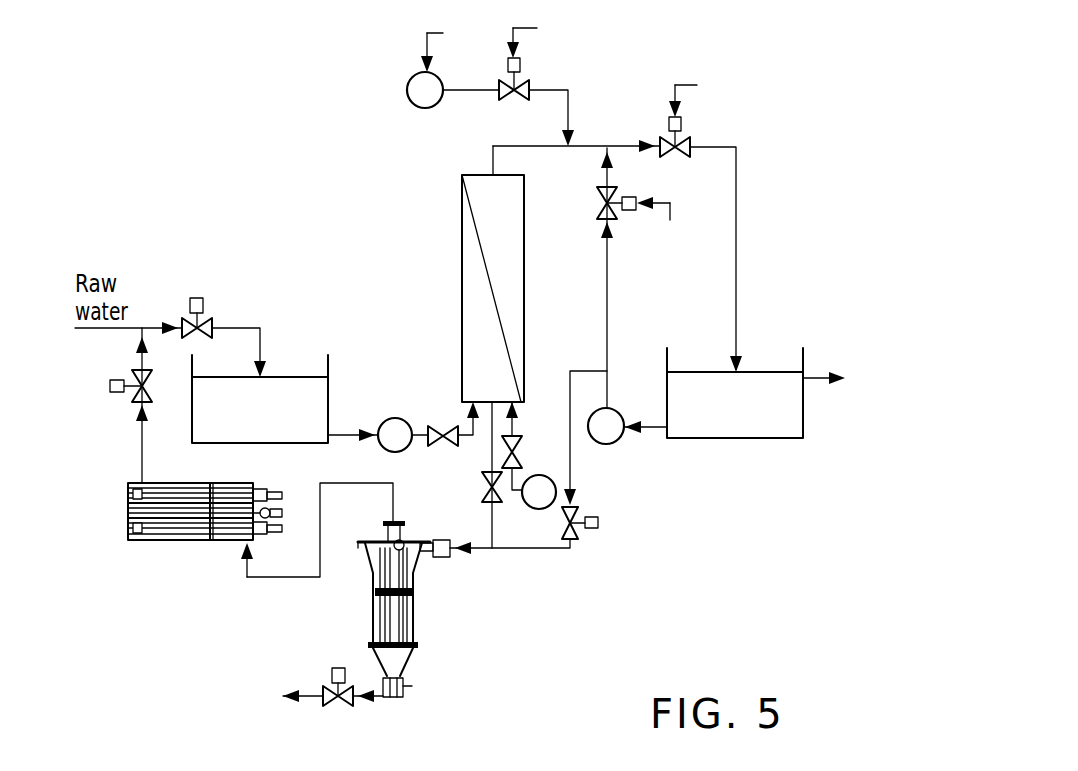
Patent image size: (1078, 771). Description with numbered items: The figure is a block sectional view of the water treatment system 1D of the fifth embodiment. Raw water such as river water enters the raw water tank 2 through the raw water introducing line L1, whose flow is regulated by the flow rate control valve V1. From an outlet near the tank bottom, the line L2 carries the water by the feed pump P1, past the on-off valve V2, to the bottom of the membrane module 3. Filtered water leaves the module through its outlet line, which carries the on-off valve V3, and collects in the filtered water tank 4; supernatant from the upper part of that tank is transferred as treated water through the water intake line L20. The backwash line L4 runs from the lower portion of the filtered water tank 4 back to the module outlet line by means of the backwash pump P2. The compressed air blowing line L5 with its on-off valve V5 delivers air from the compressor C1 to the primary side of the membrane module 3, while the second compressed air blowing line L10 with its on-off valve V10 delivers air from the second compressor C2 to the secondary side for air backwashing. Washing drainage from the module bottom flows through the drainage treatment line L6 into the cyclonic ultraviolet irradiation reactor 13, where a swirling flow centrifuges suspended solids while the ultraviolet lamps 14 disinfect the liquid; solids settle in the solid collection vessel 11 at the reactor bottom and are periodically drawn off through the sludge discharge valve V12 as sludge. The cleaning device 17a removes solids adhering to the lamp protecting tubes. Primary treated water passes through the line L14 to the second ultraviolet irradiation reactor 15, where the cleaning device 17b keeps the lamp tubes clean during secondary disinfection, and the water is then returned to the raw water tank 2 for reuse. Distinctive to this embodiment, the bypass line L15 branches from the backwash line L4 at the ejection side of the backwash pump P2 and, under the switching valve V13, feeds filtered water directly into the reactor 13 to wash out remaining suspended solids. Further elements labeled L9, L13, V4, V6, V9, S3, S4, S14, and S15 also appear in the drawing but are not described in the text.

The water treatment system 1D is at (332, 203).
The raw water tank 2 is at (329, 388).
The membrane module 3 is at (462, 217).
The filtered water tank 4 is at (805, 356).
The solid collection vessel 11 is at (393, 698).
The cyclonic ultraviolet irradiation reactor 13 is at (415, 626).
The ultraviolet lamps 14 is at (375, 600).
The second ultraviolet irradiation reactor 15 is at (150, 533).
The cleaning device 17a is at (413, 592).
The cleaning device 17b is at (212, 542).
The raw water introducing line L1 is at (152, 322).
The raw water supply line L2 is at (351, 432).
The backwash line L4 is at (605, 282).
The compressed air blowing line L5 is at (510, 495).
The drainage treatment line L6 is at (490, 520).
The raw water bypass line L9 is at (140, 452).
The compressed air blowing line L10 is at (573, 113).
The sludge line L13 is at (311, 690).
The line L14 is at (270, 580).
The bypass line L15 is at (580, 488).
The water intake line L20 is at (812, 381).
The flow rate control valve V1 is at (207, 317).
The on-off valve V2 is at (447, 427).
The on-off valve V3 is at (692, 140).
The valve V4 is at (598, 204).
The on-off valve V5 is at (520, 440).
The valve V6 is at (482, 481).
The valve V9 is at (131, 391).
The on-off valve V10 is at (535, 81).
The sludge discharge valve V12 is at (327, 707).
The switching valve V13 is at (580, 530).
The feed pump P1 is at (393, 418).
The backwash pump P2 is at (620, 409).
The compressor C1 is at (556, 480).
The second compressor C2 is at (407, 90).
The control signal S3 is at (684, 86).
The control signal S4 is at (670, 215).
The control signal S14 is at (526, 29).
The control signal S15 is at (425, 40).